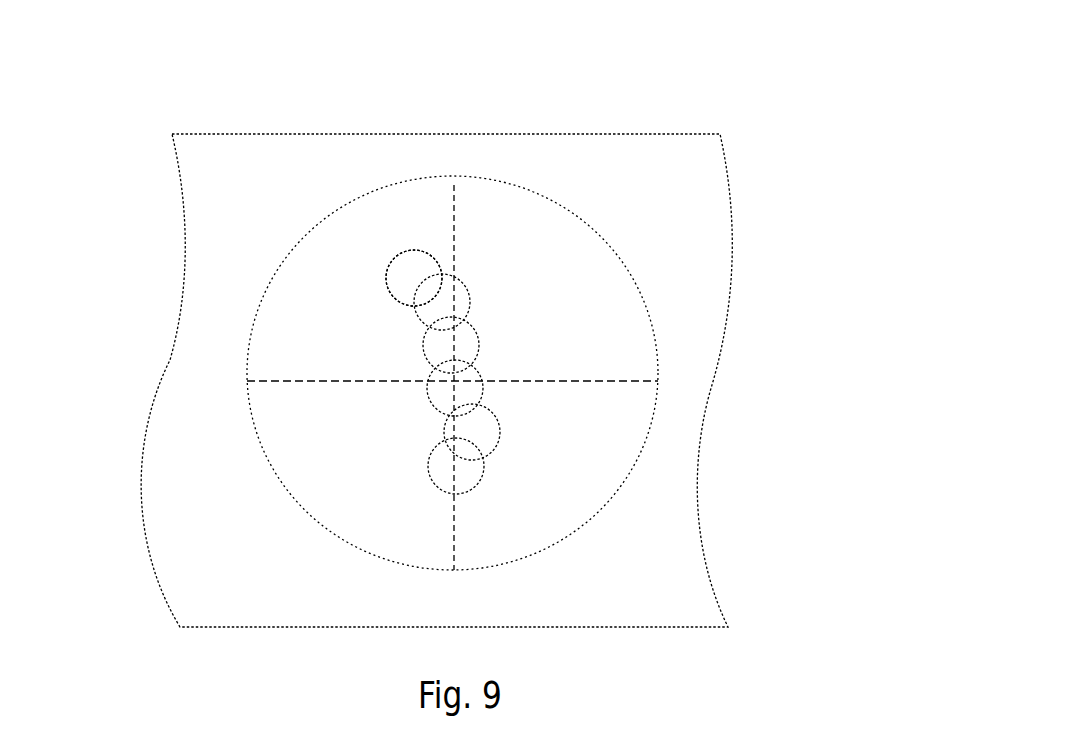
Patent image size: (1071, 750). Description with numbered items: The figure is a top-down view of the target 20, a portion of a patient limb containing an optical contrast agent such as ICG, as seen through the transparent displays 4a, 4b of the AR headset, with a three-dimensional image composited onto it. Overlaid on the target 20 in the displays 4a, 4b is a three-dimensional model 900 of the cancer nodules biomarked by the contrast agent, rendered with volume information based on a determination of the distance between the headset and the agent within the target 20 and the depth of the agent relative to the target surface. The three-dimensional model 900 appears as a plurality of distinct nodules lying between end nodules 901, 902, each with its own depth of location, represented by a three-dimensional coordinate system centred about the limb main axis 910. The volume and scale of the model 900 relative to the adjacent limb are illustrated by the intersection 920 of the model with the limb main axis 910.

The transparent display 4a is at (380, 366).
The transparent display 4b is at (137, 141).
The target 20 is at (618, 255).
The 3D model 900 is at (498, 443).
The end nodule 901 is at (463, 483).
The end nodule 902 is at (403, 268).
The limb main axis 910 is at (620, 383).
The intersection 920 is at (452, 358).